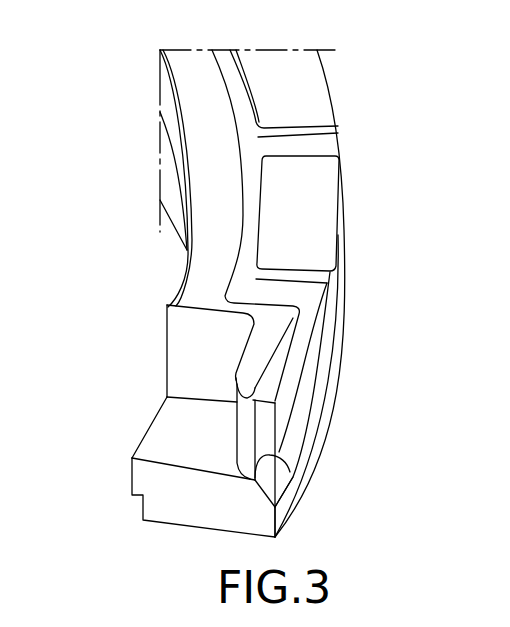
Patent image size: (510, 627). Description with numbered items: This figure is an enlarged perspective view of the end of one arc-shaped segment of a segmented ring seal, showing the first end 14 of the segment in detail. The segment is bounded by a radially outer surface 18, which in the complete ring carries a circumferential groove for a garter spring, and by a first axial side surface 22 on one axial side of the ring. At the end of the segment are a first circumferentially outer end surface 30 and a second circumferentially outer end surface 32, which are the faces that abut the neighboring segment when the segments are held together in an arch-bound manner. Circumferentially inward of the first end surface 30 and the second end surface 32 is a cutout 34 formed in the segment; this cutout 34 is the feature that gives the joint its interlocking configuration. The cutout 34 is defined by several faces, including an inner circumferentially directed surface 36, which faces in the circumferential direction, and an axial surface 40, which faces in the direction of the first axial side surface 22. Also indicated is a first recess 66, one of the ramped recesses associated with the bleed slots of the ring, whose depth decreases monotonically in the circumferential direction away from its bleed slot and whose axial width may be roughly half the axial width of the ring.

The first end 14 is at (361, 359).
The radially outer surface 18 is at (288, 407).
The first axial side surface 22 is at (303, 97).
The first circumferentially outer end surface 30 is at (266, 440).
The second circumferentially outer end surface 32 is at (195, 503).
The cutout 34 is at (136, 371).
The inner circumferentially directed surface 36 is at (188, 322).
The axial surface 40 is at (172, 433).
The first recess 66 is at (170, 166).